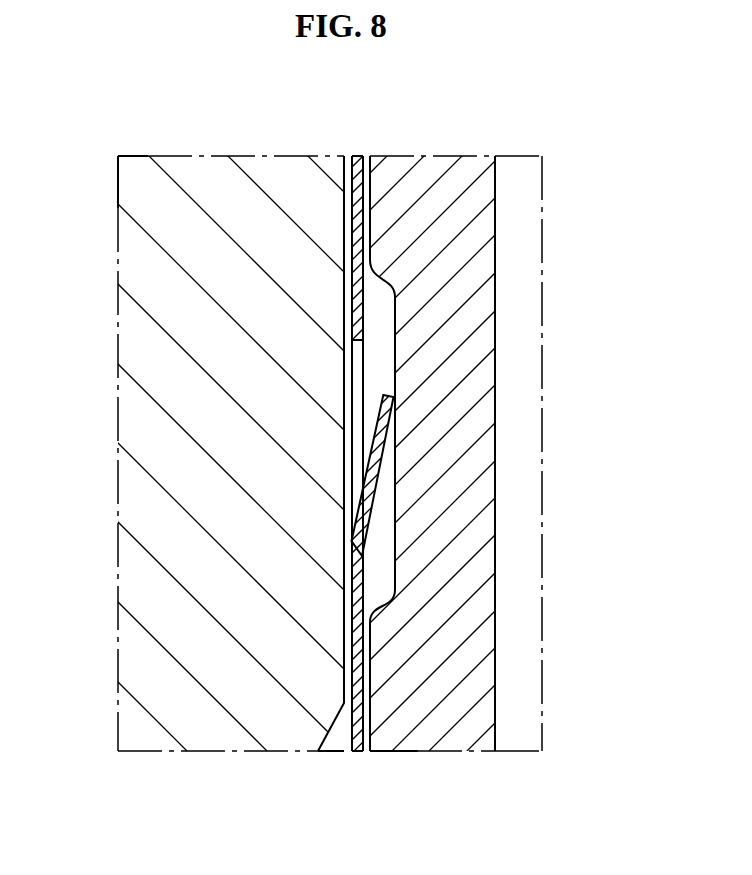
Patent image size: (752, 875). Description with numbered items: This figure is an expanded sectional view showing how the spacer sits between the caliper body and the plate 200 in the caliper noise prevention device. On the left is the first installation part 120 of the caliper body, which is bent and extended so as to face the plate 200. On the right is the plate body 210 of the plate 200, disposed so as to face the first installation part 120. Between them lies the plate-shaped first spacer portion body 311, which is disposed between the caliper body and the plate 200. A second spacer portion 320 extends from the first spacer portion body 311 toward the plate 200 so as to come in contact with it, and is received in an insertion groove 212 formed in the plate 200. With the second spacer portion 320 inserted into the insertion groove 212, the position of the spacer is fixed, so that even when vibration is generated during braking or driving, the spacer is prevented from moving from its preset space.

The first installation part 120 is at (170, 390).
The plate 200 is at (376, 450).
The plate body 210 is at (445, 361).
The insertion groove 212 is at (395, 567).
The first spacer portion body 311 is at (362, 656).
The second spacer portion 320 is at (373, 443).